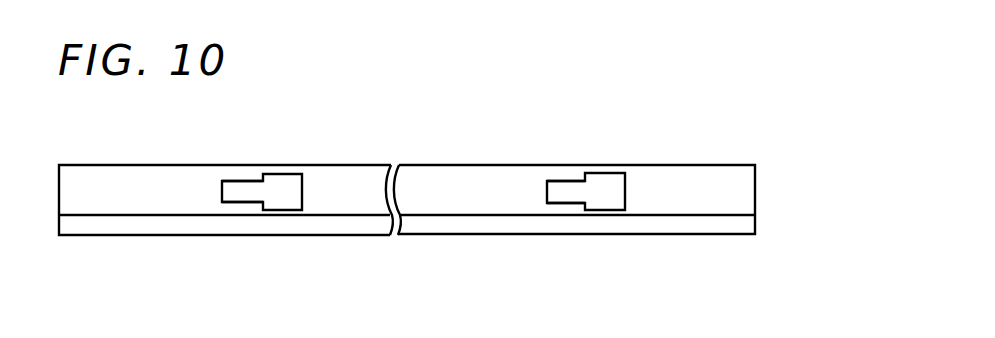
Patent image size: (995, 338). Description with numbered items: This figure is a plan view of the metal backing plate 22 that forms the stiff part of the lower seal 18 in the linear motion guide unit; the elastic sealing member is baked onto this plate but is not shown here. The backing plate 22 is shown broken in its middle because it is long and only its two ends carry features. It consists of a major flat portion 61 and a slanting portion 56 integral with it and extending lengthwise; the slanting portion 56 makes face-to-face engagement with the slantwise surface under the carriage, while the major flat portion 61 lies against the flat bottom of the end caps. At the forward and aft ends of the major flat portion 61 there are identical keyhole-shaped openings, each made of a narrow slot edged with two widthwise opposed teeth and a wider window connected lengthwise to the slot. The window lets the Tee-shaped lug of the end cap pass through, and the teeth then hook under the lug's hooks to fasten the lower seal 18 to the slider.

The lower seal 18 is at (600, 150).
The metal backing plate 22 is at (490, 164).
The slanting portion 56 is at (466, 225).
The major flat portion 61 is at (449, 187).